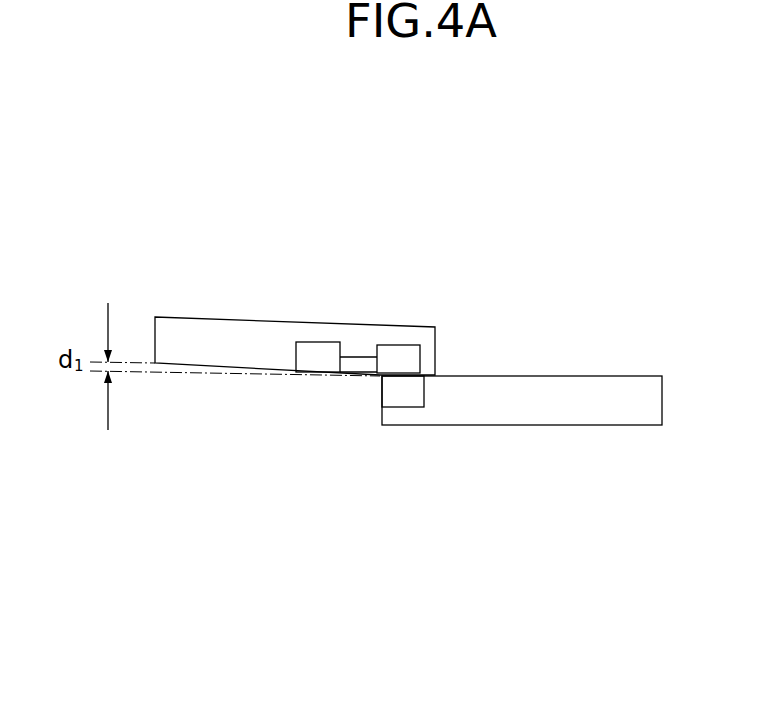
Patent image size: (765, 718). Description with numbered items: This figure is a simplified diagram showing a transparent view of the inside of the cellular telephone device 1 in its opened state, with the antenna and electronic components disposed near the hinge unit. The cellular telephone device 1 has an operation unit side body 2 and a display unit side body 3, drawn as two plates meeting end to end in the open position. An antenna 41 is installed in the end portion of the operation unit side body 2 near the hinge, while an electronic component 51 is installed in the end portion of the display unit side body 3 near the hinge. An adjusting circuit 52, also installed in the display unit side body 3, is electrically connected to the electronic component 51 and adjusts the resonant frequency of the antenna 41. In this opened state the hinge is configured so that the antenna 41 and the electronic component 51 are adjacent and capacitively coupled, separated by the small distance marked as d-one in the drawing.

The cellular telephone device 1 is at (588, 216).
The operation unit side body 2 is at (645, 366).
The display unit side body 3 is at (194, 274).
The antenna 41 is at (402, 407).
The electronic component 51 is at (400, 345).
The adjusting circuit 52 is at (318, 342).